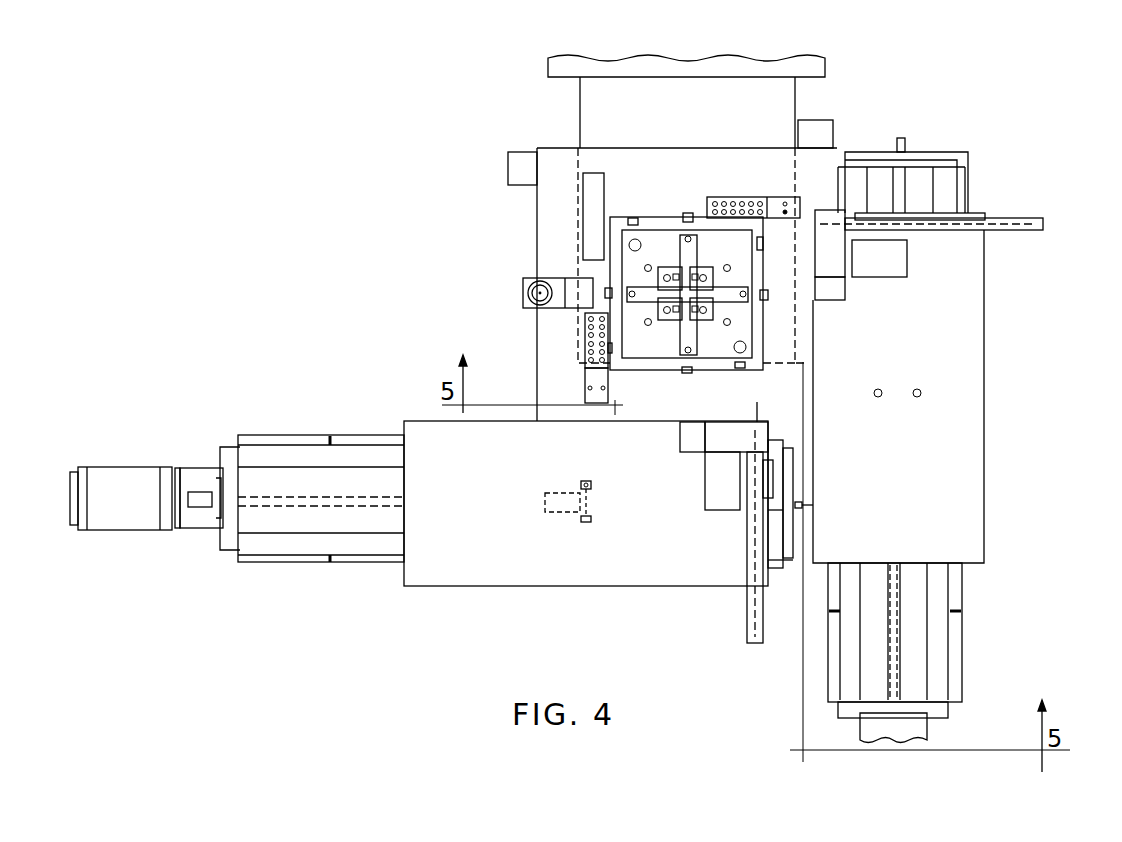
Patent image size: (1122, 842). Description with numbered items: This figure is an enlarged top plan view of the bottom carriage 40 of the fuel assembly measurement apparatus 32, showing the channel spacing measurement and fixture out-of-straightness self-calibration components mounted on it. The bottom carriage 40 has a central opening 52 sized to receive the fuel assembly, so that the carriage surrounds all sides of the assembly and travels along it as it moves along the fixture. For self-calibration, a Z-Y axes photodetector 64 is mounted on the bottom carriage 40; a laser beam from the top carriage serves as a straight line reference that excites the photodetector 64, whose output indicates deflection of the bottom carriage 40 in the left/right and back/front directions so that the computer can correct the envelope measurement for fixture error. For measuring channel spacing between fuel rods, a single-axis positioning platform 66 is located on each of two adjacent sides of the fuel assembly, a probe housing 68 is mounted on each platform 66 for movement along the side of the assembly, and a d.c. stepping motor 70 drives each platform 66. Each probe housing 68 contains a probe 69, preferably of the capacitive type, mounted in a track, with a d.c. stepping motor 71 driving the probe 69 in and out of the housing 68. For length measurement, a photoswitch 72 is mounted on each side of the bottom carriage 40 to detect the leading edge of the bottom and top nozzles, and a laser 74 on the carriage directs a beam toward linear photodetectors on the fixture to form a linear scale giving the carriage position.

The apparatus 32 is at (1013, 580).
The bottom carriage 40 is at (680, 588).
The central opening 52 is at (615, 250).
The Z-Y axes photodetector 64 is at (525, 293).
The single-axis positioning platform 66 is at (500, 587).
The probe housing 68 is at (938, 231).
The probe 69 is at (805, 222).
The d.c. stepping motor 70 is at (130, 527).
The d.c. stepping motor 71 is at (873, 278).
The photoswitch 72 is at (605, 293).
The laser 74 is at (588, 210).